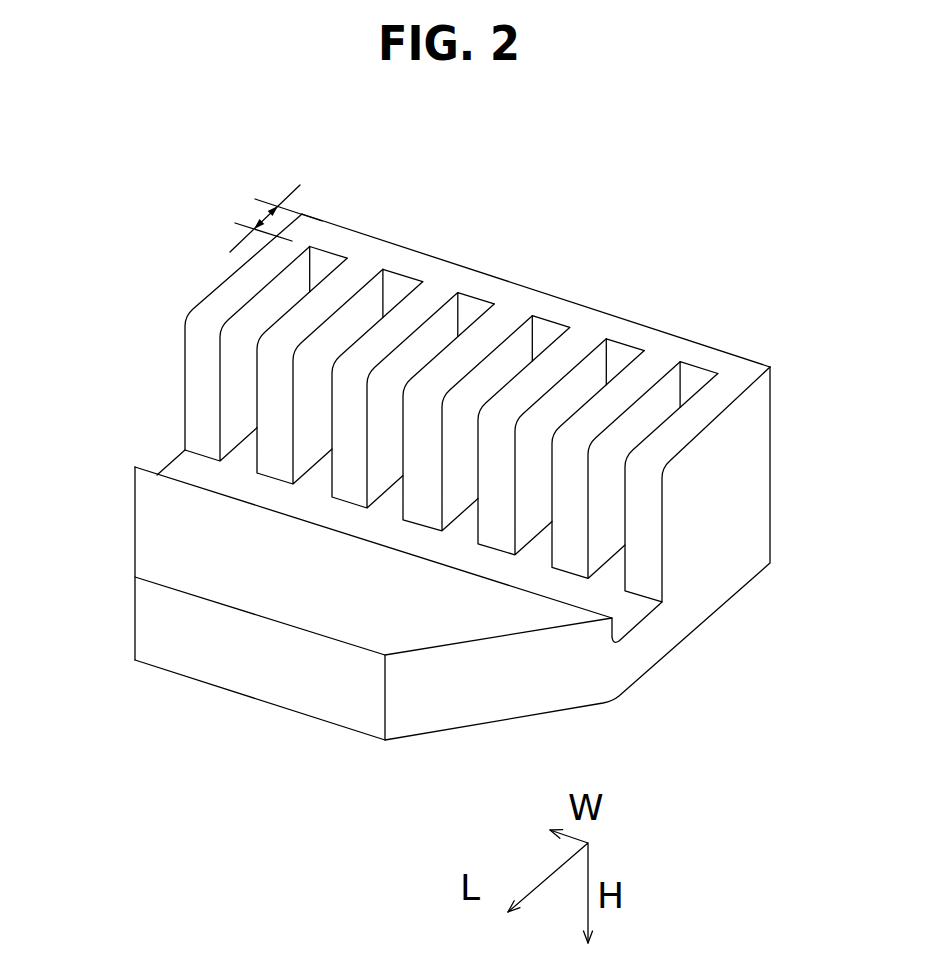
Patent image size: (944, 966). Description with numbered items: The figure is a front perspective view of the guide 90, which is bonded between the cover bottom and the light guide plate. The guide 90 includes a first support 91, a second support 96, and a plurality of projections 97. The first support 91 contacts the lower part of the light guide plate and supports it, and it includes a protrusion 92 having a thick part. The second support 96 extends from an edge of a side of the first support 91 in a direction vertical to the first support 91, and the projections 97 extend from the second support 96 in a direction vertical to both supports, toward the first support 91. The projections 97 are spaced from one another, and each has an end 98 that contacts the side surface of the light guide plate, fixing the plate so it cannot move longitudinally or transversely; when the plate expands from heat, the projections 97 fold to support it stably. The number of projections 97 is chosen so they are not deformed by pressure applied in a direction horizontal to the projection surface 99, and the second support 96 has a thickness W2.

The guide 90 is at (493, 247).
The first support 91 is at (435, 712).
The protrusion 92 is at (362, 627).
The second support 96 is at (660, 348).
The projection 97 is at (427, 305).
The end 98 is at (200, 377).
The projection surface 99 is at (710, 487).